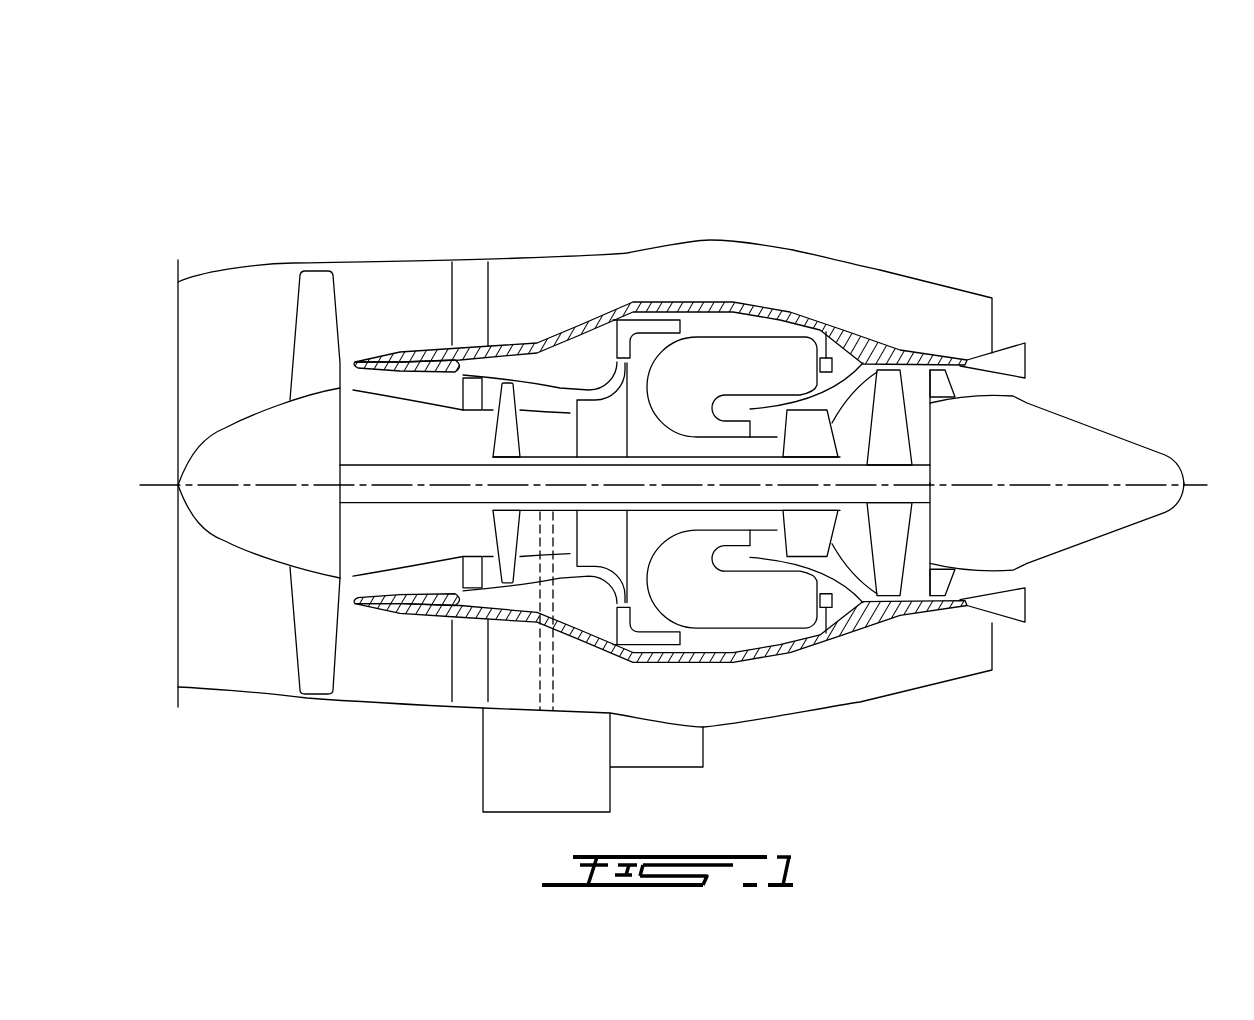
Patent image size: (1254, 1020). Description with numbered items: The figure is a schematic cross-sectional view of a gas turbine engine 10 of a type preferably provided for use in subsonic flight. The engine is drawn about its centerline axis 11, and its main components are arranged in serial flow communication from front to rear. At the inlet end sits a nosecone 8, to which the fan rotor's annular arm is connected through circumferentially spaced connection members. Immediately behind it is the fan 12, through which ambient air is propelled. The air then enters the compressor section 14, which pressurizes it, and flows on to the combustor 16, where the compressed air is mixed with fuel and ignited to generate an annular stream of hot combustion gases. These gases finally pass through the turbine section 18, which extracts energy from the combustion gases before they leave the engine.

The nosecone 8 is at (222, 430).
The gas turbine engine 10 is at (872, 182).
The centerline axis 11 is at (1215, 483).
The fan 12 is at (315, 623).
The compressor section 14 is at (537, 393).
The combustor 16 is at (733, 357).
The turbine section 18 is at (850, 543).